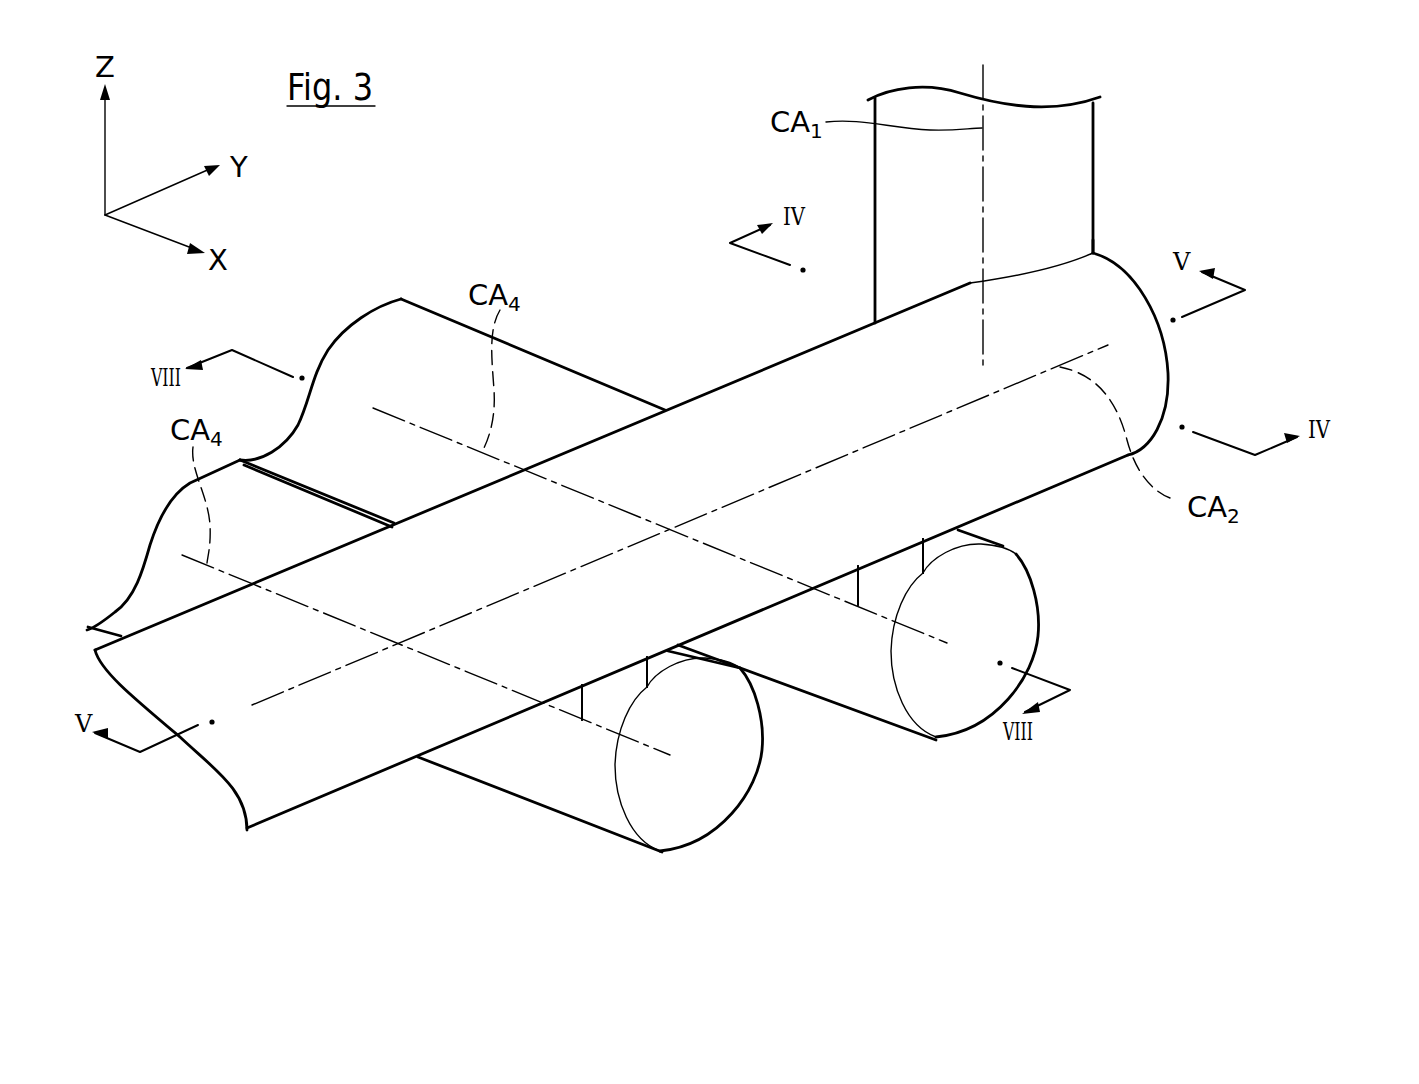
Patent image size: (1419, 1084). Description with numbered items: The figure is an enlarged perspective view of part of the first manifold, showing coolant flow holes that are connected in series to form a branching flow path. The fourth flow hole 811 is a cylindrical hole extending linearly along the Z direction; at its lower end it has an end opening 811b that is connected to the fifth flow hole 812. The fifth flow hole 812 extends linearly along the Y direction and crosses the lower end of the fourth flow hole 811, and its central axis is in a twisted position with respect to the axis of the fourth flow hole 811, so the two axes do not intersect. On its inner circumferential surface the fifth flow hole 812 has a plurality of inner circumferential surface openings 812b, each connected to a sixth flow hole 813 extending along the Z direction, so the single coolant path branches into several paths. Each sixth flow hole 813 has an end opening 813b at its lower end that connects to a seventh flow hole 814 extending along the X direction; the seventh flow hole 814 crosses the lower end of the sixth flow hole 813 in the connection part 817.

The fourth flow hole 811 is at (1054, 205).
The end opening 811b is at (1211, 220).
The fifth flow hole 812 is at (693, 541).
The inner circumferential surface opening 812b is at (831, 703).
The sixth flow hole 813 is at (733, 695).
The end opening 813b is at (914, 706).
The seventh flow hole 814 is at (638, 600).
The connection part 817 is at (839, 741).